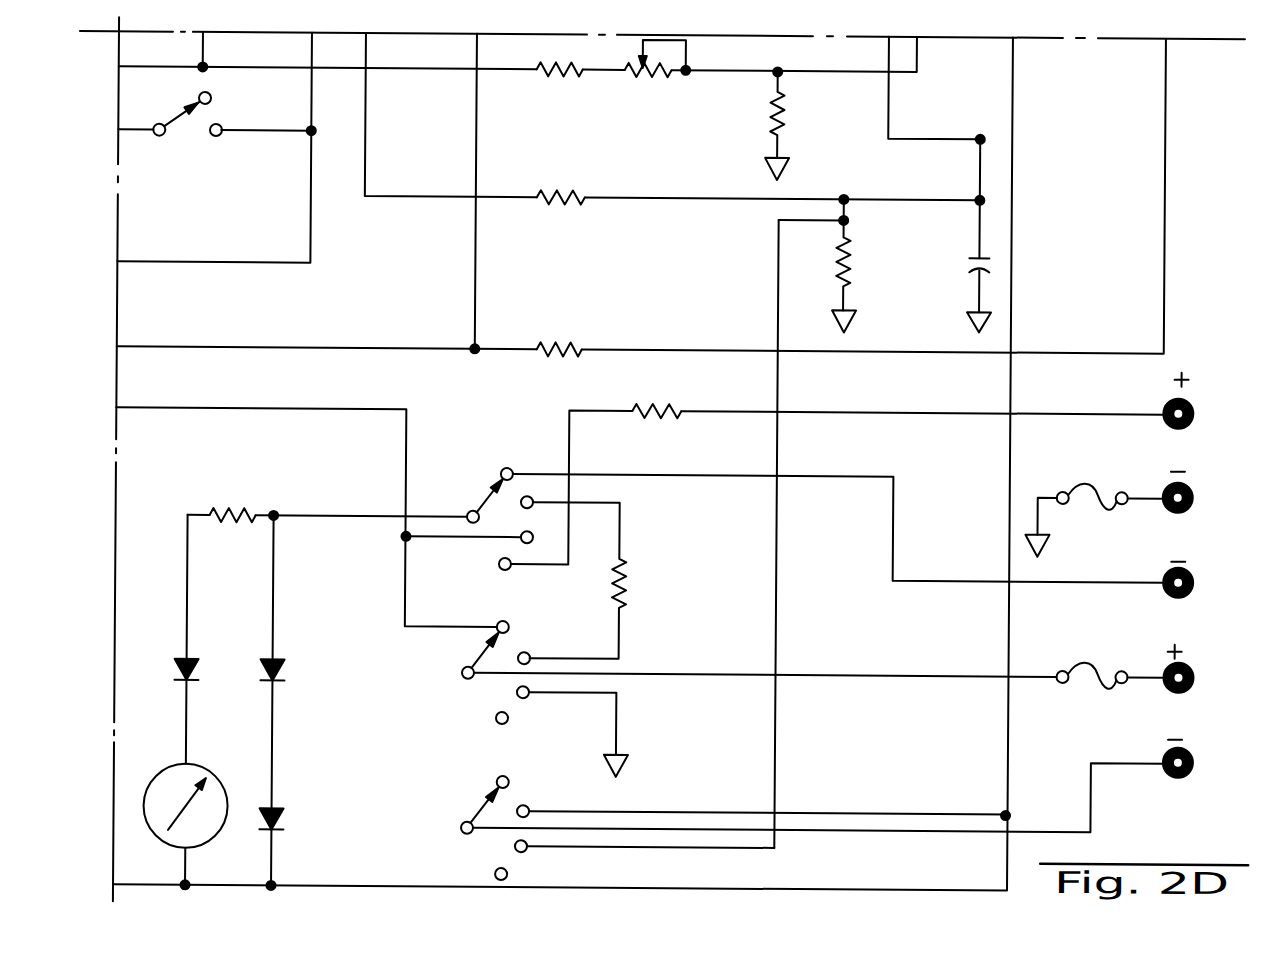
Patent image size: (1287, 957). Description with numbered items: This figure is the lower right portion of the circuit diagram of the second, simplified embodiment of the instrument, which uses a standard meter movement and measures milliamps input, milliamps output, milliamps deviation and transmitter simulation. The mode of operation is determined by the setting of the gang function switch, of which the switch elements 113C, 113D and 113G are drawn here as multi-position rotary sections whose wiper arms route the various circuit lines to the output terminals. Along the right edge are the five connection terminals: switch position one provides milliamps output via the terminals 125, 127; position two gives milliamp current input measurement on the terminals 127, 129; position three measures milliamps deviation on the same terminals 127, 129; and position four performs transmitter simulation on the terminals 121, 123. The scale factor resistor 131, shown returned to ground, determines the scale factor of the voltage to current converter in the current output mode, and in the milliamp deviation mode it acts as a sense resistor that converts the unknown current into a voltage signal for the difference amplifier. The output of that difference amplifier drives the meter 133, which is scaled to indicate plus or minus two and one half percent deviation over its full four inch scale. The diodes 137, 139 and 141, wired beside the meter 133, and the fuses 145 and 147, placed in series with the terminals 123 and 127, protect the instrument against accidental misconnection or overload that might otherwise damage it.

The switch element 113C is at (463, 486).
The switch element 113D is at (464, 655).
The switch element 113G is at (476, 797).
The terminal 121 is at (1193, 411).
The terminal 123 is at (1193, 494).
The terminal 125 is at (1194, 577).
The terminal 127 is at (1195, 673).
The terminal 129 is at (1195, 758).
The scale factor resistor 131 is at (846, 256).
The meter 133 is at (197, 767).
The diode 137 is at (197, 662).
The diode 139 is at (283, 662).
The diode 141 is at (283, 811).
The fuse 145 is at (1079, 480).
The fuse 147 is at (1083, 667).